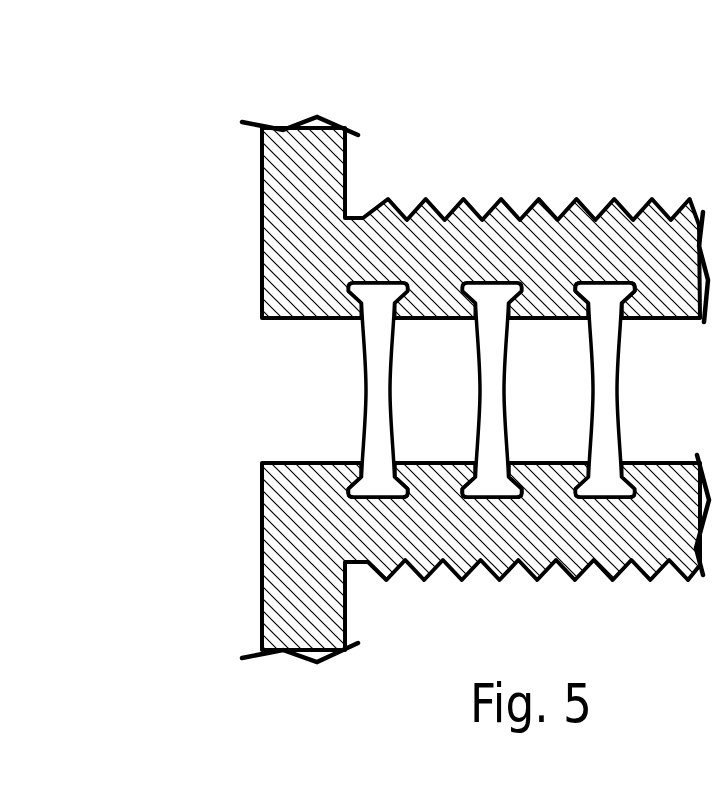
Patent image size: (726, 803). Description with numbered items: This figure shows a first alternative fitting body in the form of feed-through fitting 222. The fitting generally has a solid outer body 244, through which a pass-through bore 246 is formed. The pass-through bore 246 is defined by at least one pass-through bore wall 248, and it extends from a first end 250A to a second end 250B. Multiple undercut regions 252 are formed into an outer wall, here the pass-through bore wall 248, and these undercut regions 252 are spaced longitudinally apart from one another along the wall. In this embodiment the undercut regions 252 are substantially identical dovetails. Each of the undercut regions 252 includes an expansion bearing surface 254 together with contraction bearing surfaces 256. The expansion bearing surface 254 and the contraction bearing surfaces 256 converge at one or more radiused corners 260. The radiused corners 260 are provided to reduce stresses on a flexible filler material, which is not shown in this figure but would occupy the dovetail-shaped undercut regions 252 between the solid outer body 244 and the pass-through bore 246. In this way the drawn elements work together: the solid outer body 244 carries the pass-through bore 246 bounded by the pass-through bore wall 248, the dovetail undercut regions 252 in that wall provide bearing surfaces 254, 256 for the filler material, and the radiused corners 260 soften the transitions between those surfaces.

The feed-through fitting 222 is at (205, 165).
The solid outer body 244 is at (297, 202).
The pass-through bore 246 is at (311, 413).
The pass-through bore wall 248 is at (285, 462).
The first end 250A is at (282, 384).
The second end 250B is at (723, 392).
The undercut regions 252 is at (485, 272).
The expansion bearing surface 254 is at (612, 283).
The contraction bearing surfaces 256 is at (632, 292).
The radiused corners 260 is at (466, 476).